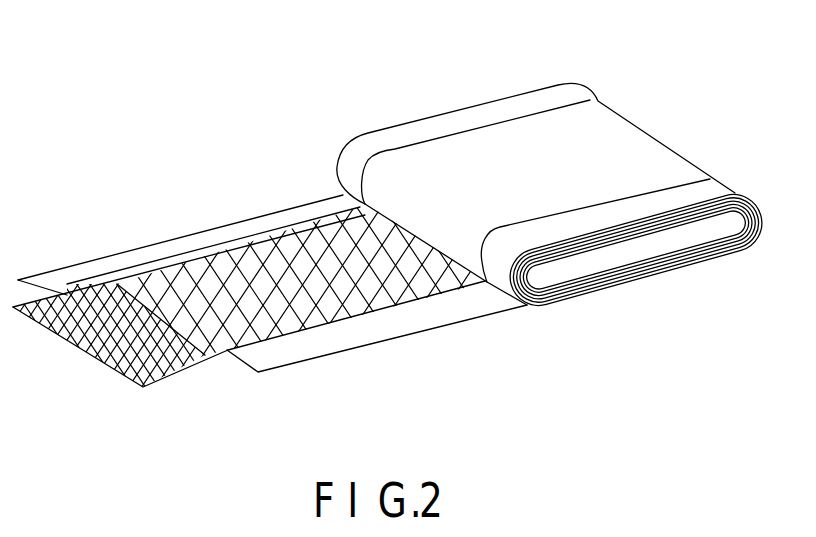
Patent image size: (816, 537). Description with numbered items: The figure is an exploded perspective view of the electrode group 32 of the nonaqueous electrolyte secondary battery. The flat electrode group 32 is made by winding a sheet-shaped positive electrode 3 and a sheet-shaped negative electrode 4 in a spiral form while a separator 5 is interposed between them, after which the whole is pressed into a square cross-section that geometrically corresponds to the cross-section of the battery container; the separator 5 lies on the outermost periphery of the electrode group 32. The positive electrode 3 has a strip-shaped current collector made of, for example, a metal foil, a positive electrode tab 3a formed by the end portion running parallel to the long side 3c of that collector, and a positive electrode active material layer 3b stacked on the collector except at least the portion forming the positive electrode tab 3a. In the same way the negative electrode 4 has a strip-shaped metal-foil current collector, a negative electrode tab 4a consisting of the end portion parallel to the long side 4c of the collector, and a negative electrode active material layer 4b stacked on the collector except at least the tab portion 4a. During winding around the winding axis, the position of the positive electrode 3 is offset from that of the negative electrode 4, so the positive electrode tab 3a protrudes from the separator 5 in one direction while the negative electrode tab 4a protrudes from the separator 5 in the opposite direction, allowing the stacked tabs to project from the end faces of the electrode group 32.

The positive electrode 3 is at (182, 273).
The positive electrode tab 3a is at (504, 103).
The positive electrode active material layer 3b is at (68, 296).
The long side of the positive electrode current collector 3c is at (100, 258).
The electrode group 32 is at (536, 162).
The negative electrode 4 is at (384, 270).
The negative electrode tab 4a is at (713, 187).
The negative electrode active material layer 4b is at (330, 308).
The long side of the negative electrode current collector 4c is at (440, 326).
The separator 5 is at (200, 352).